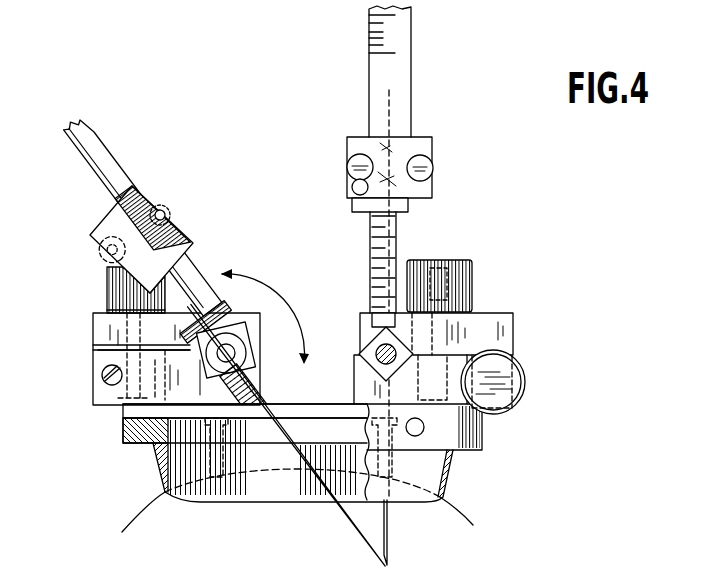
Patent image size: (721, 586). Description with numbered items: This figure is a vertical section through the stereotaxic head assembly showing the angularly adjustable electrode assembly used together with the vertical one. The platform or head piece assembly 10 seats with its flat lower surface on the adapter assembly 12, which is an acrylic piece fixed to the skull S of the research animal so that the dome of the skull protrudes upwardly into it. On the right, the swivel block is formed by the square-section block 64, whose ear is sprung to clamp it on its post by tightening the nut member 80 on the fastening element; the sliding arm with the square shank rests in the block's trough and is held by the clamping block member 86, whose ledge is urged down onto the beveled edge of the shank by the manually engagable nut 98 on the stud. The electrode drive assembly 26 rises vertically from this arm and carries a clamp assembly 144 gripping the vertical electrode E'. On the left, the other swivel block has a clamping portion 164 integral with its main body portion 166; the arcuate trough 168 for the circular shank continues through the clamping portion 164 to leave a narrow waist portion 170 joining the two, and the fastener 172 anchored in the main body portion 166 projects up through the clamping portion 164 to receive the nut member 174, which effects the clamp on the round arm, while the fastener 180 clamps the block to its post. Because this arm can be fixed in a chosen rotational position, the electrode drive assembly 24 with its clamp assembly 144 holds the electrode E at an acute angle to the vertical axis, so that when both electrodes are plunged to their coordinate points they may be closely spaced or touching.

The platform or head piece assembly 10 is at (492, 432).
The adapter assembly 12 is at (457, 470).
The electrode drive assembly 24 is at (130, 163).
The electrode drive assembly 26 is at (358, 78).
The block 64 is at (368, 388).
The nut member 80 is at (503, 383).
The clamping block member 86 is at (483, 327).
The manually engagable nut 98 is at (452, 267).
The clamp assembly 144 is at (188, 199).
The clamping portion 164 is at (98, 322).
The main body portion 166 is at (127, 407).
The trough 168 is at (215, 382).
The narrow waist portion 170 is at (262, 332).
The fastener 172 is at (93, 358).
The nut member 174 is at (110, 280).
The fastener 180 is at (103, 385).
The electrode E is at (287, 435).
The electrode E' is at (406, 532).
The skull S is at (465, 510).